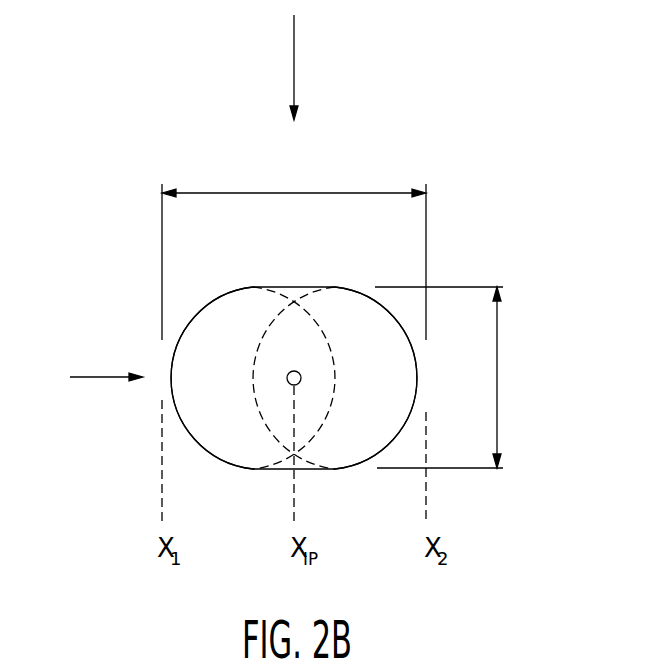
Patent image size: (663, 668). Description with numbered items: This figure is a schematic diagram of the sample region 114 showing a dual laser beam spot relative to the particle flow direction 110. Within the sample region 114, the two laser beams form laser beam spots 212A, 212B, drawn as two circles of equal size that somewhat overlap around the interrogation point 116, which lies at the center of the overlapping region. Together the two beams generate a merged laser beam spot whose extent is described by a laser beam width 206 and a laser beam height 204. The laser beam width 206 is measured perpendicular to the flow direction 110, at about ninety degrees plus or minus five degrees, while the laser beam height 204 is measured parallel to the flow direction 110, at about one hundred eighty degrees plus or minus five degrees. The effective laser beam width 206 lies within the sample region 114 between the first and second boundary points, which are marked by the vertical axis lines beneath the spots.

The particle flow direction 110 is at (294, 58).
The sample region 114 is at (89, 378).
The interrogation point 116 is at (294, 368).
The laser beam height 204 is at (497, 378).
The laser beam width 206 is at (294, 190).
The laser beam spot 212A is at (232, 303).
The laser beam spot 212B is at (358, 297).